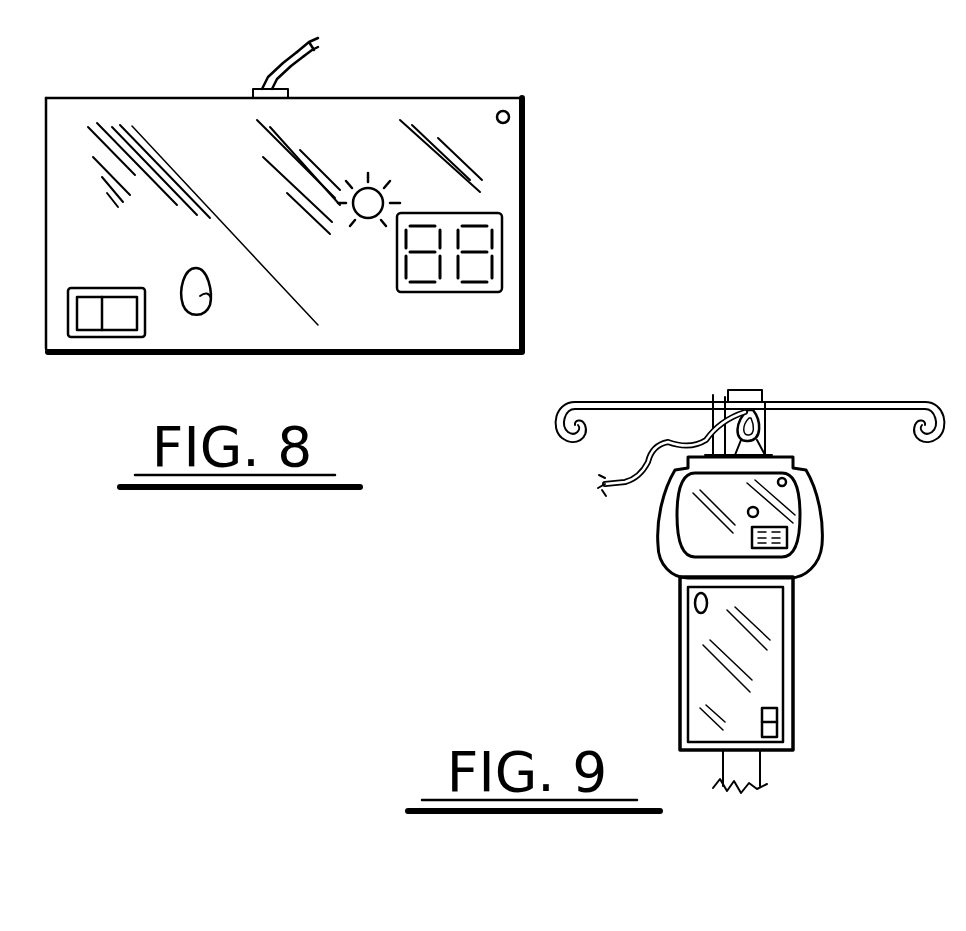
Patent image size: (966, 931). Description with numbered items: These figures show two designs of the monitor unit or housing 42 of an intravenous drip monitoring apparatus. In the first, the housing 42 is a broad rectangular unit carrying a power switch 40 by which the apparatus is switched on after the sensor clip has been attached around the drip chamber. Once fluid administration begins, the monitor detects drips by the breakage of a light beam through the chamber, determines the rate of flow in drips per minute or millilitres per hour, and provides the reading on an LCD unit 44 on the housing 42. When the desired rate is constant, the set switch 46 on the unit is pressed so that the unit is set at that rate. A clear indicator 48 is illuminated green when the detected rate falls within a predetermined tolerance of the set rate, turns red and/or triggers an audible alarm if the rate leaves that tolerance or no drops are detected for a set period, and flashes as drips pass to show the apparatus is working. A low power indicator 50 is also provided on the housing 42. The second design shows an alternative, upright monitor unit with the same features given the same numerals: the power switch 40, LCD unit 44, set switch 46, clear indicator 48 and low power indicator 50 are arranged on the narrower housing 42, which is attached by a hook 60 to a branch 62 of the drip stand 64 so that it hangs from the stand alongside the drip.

In FIG. 8, the power switch 40 is at (125, 330).
In FIG. 9, the power switch 40 is at (793, 703).
In FIG. 8, the monitor unit or housing 42 is at (445, 99).
In FIG. 9, the monitor unit or housing 42 is at (793, 613).
In FIG. 8, the LCD unit 44 is at (453, 293).
In FIG. 9, the LCD unit 44 is at (787, 537).
In FIG. 8, the set switch 46 is at (211, 300).
In FIG. 9, the set switch 46 is at (695, 607).
In FIG. 8, the clear indicator 48 is at (368, 218).
In FIG. 9, the clear indicator 48 is at (748, 509).
In FIG. 8, the low power indicator 50 is at (511, 121).
In FIG. 9, the low power indicator 50 is at (787, 484).
In FIG. 9, the hook 60 is at (713, 395).
In FIG. 9, the branch 62 is at (798, 400).
In FIG. 9, the drip stand 64 is at (762, 770).